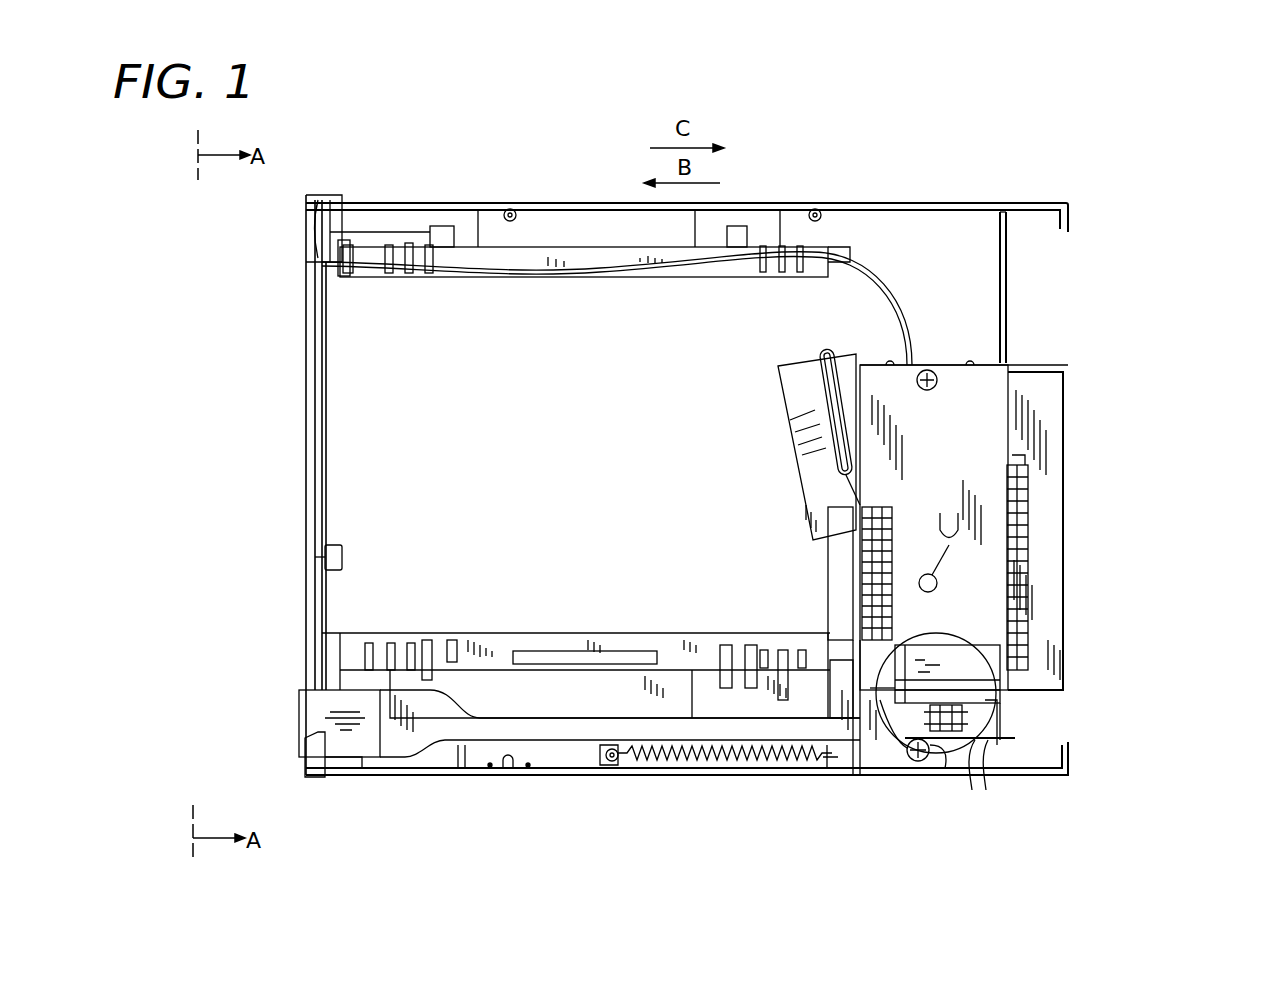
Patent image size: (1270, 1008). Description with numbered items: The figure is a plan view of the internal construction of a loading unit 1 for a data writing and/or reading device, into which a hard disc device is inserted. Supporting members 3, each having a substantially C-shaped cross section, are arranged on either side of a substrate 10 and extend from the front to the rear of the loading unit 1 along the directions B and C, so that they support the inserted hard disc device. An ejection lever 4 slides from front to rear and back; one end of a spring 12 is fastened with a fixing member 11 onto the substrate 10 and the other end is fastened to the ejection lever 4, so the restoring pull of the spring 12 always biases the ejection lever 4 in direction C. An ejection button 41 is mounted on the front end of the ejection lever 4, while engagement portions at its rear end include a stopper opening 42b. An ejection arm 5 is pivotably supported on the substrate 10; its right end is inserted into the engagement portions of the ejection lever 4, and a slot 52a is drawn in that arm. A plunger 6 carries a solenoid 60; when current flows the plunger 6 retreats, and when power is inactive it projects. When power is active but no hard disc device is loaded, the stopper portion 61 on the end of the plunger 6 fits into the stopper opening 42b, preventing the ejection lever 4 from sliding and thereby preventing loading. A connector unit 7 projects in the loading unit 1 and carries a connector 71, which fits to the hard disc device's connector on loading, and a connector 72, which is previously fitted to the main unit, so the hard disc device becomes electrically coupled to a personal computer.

The loading unit 1 is at (637, 119).
The supporting member 3 is at (690, 638).
The ejection lever 4 is at (575, 732).
The ejection arm 5 is at (795, 365).
The plunger 6 is at (1000, 717).
The connector unit 7 is at (968, 448).
The substrate 10 is at (345, 357).
The fixing member 11 is at (855, 770).
The spring 12 is at (735, 760).
The ejection button 41 is at (300, 698).
The stopper opening 42b is at (992, 768).
The slot of ejection arm 52a is at (838, 357).
The solenoid 60 is at (953, 657).
The stopper portion 61 is at (986, 770).
The connector 71 is at (845, 582).
The connector 72 is at (1052, 546).